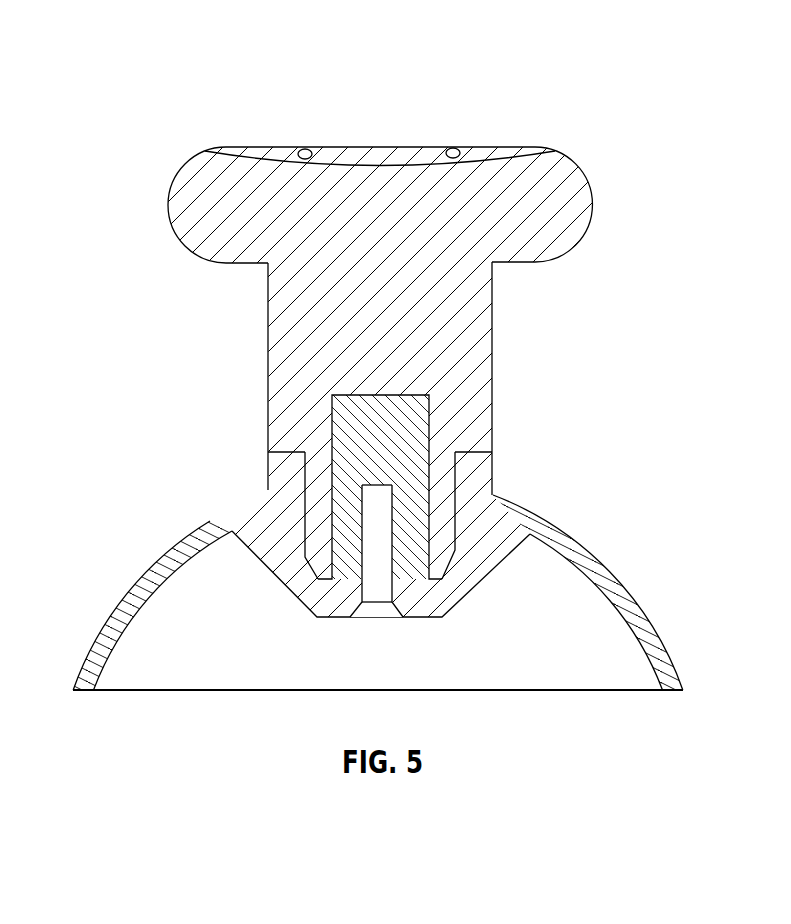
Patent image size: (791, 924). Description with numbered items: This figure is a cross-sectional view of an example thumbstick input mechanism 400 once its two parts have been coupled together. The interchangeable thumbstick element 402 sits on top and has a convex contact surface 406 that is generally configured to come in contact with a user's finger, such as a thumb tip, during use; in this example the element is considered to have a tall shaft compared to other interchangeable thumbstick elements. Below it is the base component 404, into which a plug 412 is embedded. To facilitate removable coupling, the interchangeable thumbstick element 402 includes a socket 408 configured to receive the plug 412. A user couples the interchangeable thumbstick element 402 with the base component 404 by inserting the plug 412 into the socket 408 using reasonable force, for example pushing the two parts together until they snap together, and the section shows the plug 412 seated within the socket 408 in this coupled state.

The input mechanism 400 is at (411, 42).
The interchangeable thumbstick element 402 is at (497, 264).
The base component 404 is at (158, 582).
The convex contact surface 406 is at (525, 192).
The socket 408 is at (303, 452).
The plug 412 is at (392, 413).